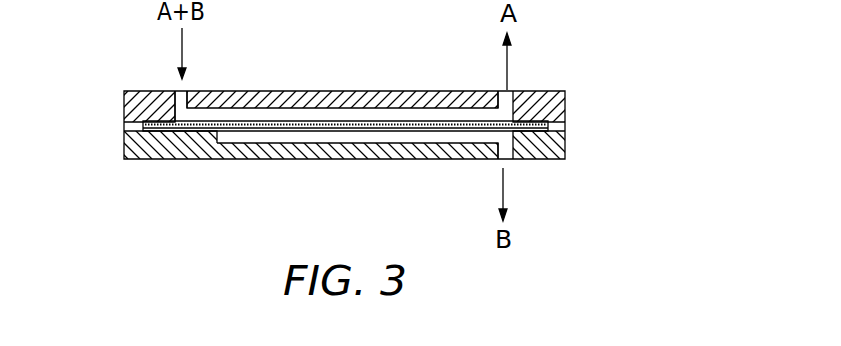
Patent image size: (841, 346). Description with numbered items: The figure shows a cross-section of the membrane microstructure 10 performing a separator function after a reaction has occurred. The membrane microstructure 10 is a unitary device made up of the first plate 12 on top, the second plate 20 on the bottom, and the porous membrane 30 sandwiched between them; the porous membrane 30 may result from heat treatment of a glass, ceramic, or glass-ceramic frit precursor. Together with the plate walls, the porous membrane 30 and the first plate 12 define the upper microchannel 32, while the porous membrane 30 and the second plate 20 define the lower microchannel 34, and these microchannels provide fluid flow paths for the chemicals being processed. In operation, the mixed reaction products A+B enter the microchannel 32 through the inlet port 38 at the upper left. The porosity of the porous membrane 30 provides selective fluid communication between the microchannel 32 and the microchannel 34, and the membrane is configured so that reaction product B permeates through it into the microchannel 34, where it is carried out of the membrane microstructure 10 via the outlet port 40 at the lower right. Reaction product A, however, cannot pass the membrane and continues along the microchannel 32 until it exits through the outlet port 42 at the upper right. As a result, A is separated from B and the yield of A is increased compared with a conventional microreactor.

The membrane microstructure 10 is at (607, 128).
The first plate 12 is at (125, 93).
The second plate 20 is at (123, 155).
The porous membrane 30 is at (433, 121).
The microchannel 32 is at (348, 102).
The microchannel 34 is at (343, 150).
The inlet port 38 is at (177, 90).
The outlet port 40 is at (508, 160).
The outlet port 42 is at (507, 91).